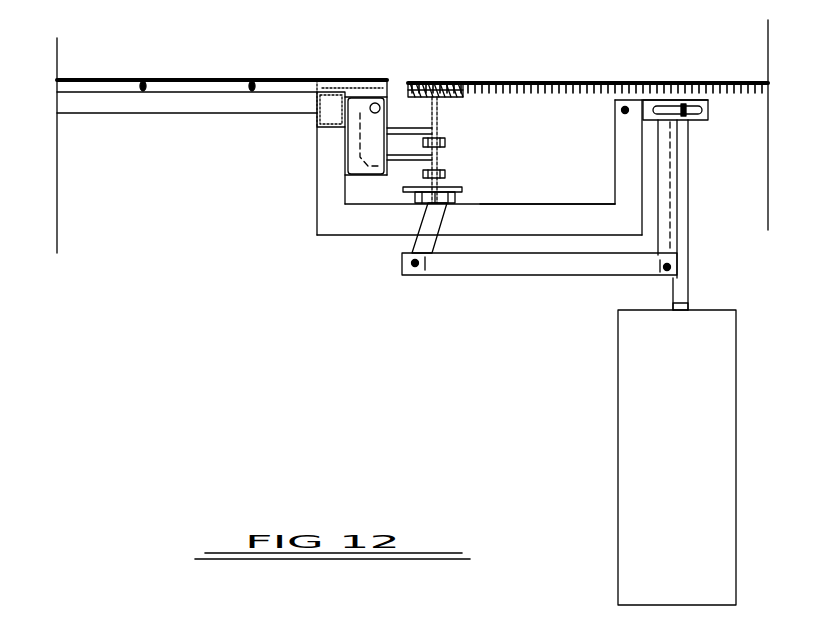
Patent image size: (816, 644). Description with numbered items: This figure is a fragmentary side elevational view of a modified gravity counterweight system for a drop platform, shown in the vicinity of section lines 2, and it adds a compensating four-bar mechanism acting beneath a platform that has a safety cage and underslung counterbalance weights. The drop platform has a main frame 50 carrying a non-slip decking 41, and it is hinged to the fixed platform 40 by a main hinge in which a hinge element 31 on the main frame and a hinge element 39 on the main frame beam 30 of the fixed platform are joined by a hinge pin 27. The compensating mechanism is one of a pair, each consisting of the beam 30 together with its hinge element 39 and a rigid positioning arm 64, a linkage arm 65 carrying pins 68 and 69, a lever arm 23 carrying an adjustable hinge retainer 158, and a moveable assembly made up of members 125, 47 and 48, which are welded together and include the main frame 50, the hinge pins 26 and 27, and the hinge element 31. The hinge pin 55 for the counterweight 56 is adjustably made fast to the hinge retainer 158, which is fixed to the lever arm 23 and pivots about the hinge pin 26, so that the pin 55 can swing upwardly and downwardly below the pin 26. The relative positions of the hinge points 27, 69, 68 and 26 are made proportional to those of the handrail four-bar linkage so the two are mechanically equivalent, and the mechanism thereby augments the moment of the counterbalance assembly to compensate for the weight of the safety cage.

The section line 2 is at (408, 136).
The decking 41 is at (232, 80).
The main frame 50 is at (313, 124).
The structural member 48 is at (318, 181).
The hinge element 39 is at (394, 125).
The hinge pin 27 is at (374, 102).
The beam 30 is at (452, 99).
The hinge element 31 is at (380, 184).
The fixed platform 40 is at (571, 82).
The member 125 is at (615, 143).
The hinge pin 26 is at (621, 110).
The adjustable hinge retainer 158 is at (706, 118).
The hinge pin 55 is at (683, 118).
The structural member 47 is at (567, 192).
The lever arm 23 is at (683, 239).
The rigid positioning arm 64 is at (412, 246).
The linkage arm 65 is at (497, 278).
The pin 69 is at (414, 273).
The pin 68 is at (665, 276).
The counterweight 56 is at (613, 373).